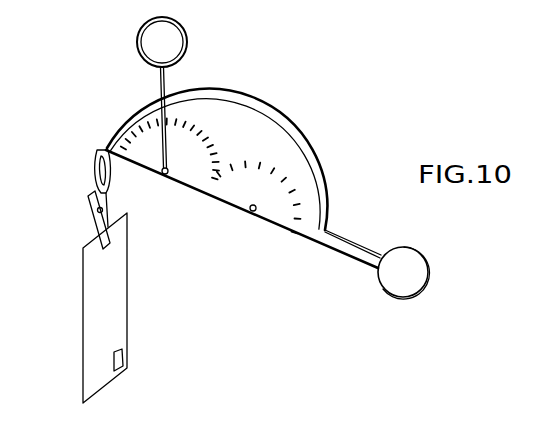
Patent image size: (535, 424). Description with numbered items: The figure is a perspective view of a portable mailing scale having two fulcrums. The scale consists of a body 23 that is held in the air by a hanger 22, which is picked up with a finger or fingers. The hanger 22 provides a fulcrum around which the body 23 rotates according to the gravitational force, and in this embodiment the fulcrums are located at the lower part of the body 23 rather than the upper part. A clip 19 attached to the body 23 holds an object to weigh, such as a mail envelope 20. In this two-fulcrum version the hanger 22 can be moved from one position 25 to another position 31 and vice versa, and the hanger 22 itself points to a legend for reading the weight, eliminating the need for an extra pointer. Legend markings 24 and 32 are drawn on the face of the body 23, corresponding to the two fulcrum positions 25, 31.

The clip 19 is at (84, 220).
The mail envelope 20 is at (77, 330).
The hanger 22 is at (188, 32).
The body 23 is at (285, 120).
The angular scale 24 is at (199, 117).
The fulcrum position 25 is at (261, 210).
The second fulcrum position 31 is at (175, 175).
The second scale 32 is at (285, 167).